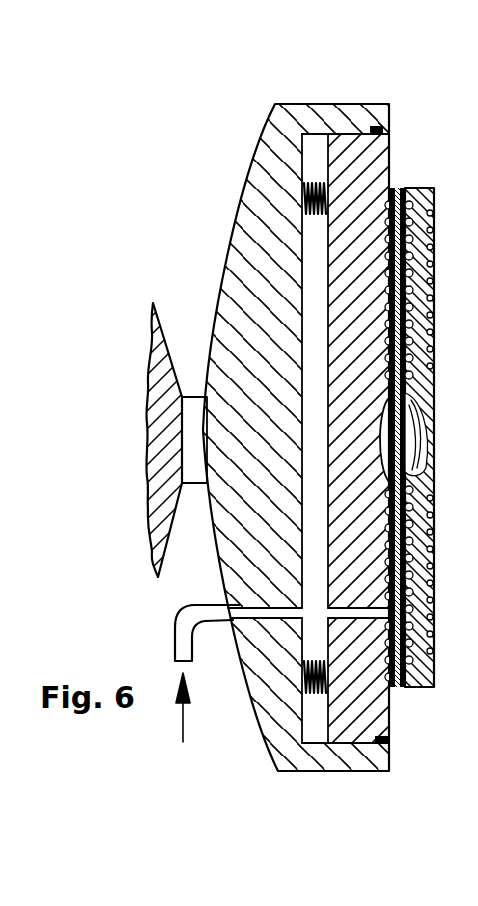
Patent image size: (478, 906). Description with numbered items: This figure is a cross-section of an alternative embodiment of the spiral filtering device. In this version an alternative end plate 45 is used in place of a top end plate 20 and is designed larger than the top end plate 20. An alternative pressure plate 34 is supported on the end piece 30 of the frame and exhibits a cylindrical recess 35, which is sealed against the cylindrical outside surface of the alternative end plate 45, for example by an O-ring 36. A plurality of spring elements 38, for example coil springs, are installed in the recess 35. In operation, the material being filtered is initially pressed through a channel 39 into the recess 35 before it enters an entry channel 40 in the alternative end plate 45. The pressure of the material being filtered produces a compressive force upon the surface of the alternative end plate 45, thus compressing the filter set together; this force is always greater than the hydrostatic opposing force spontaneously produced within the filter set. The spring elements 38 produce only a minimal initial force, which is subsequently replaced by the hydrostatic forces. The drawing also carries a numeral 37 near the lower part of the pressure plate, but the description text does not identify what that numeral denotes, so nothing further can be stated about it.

The top end plate 20 is at (372, 164).
The end piece 30 is at (153, 365).
The alternative pressure plate 34 is at (245, 333).
The cylindrical recess 35 is at (317, 335).
The O-ring 36 is at (373, 124).
The bottom plate 37 is at (334, 762).
The spring elements 38 is at (305, 196).
The channel 39 is at (238, 606).
The entry channel 40 is at (402, 688).
The alternative end plate 45 is at (390, 745).